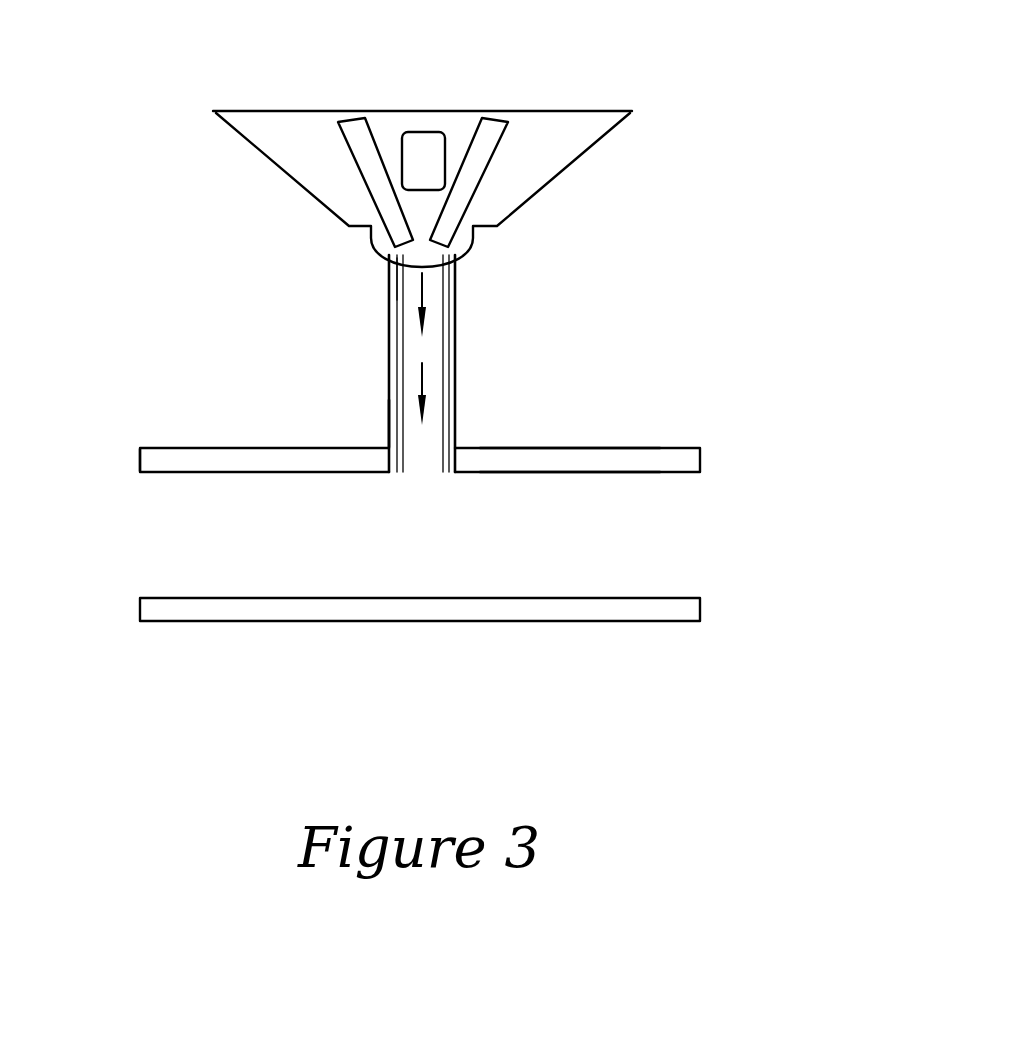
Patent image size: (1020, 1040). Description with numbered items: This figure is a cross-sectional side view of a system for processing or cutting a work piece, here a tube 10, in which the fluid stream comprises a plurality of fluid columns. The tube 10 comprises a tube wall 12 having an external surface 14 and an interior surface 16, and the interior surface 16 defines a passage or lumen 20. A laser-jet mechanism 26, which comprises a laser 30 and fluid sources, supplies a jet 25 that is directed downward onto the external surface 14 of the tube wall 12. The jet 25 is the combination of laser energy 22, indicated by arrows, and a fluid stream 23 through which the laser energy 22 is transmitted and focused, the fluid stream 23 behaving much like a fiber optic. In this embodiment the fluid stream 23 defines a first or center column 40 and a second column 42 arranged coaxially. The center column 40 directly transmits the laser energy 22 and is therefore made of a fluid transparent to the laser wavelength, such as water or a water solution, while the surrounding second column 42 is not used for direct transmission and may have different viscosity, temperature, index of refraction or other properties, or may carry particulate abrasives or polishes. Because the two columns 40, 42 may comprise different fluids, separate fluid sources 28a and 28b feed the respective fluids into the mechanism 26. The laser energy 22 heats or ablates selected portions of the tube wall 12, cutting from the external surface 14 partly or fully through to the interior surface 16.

The tube 10 is at (667, 426).
The tube wall 12 is at (181, 455).
The external surface 14 is at (567, 446).
The interior surface 16 is at (566, 477).
The lumen 20 is at (663, 537).
The laser energy 22 is at (422, 378).
The fluid stream 23 is at (403, 350).
The jet 25 is at (462, 309).
The laser-jet mechanism 26 is at (552, 133).
The fluid source 28a is at (497, 133).
The fluid source 28b is at (351, 118).
The laser 30 is at (422, 140).
The first column 40 is at (403, 311).
The second column 42 is at (389, 420).